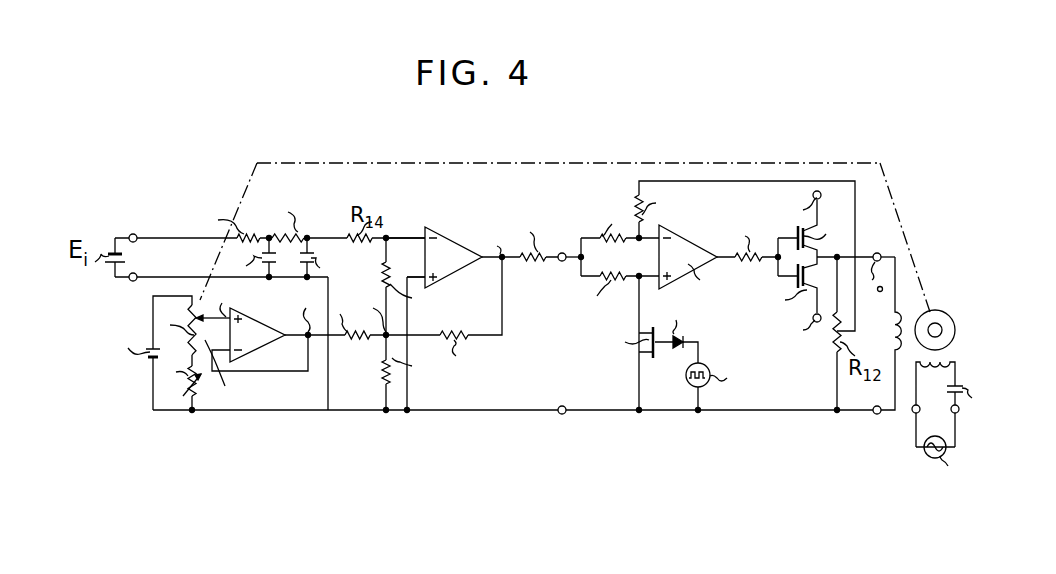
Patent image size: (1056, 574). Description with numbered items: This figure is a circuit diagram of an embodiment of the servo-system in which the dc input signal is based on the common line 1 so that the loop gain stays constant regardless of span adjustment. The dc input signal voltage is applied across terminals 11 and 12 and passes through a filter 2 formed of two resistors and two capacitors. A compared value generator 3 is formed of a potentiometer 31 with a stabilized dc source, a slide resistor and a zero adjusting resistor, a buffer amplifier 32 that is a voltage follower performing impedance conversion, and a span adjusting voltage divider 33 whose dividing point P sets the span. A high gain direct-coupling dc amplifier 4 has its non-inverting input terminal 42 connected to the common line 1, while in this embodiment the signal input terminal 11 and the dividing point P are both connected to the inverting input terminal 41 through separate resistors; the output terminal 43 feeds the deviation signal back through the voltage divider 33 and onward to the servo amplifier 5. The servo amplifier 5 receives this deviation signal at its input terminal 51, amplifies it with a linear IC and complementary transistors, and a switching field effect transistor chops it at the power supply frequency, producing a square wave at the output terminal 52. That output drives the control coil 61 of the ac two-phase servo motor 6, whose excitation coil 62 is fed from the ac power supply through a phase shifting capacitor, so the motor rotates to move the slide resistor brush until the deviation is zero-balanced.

The common line 1 is at (498, 412).
The filter 2 is at (313, 226).
The compared value generator 3 is at (222, 372).
The dc amplifier 4 is at (472, 243).
The servo amplifier 5 is at (589, 225).
The ac 2-phase servo motor 6 is at (942, 320).
The signal input terminal 11 is at (132, 237).
The input terminal 12 is at (130, 282).
The potentiometer 31 is at (153, 388).
The buffer amplifier 32 is at (260, 324).
The span adjusting voltage divider 33 is at (382, 388).
The inverting input terminal 41 is at (407, 236).
The non-inverting input terminal 42 is at (410, 277).
The output terminal 43 is at (503, 264).
The input terminal 51 is at (563, 252).
The output terminal 52 is at (884, 243).
The control coil 61 is at (894, 322).
The excitation coil 62 is at (948, 362).